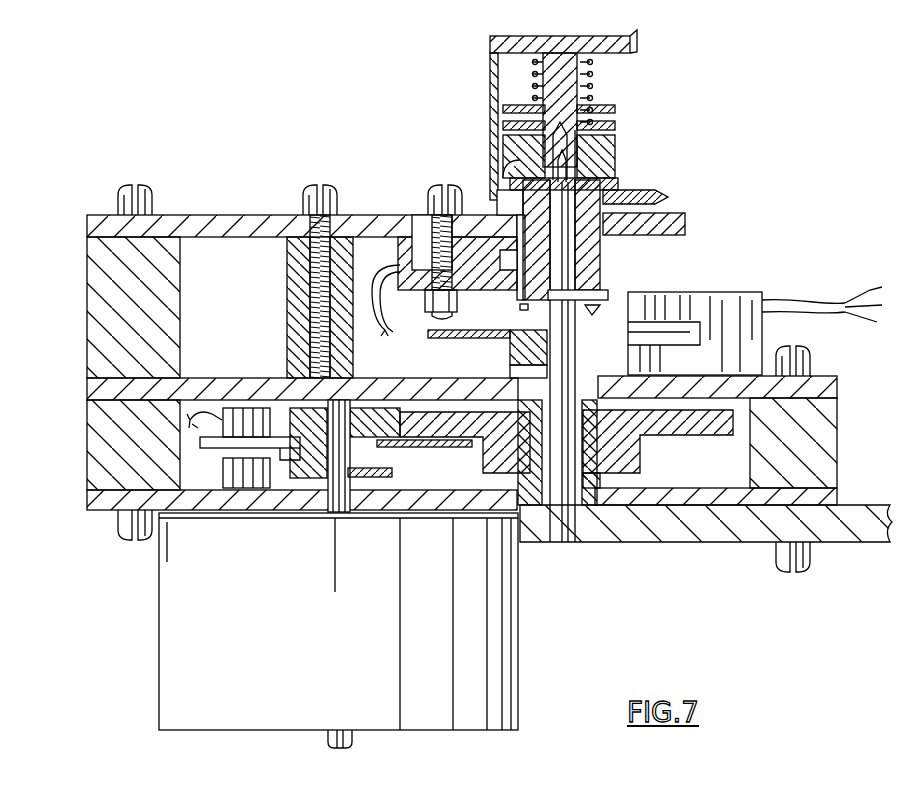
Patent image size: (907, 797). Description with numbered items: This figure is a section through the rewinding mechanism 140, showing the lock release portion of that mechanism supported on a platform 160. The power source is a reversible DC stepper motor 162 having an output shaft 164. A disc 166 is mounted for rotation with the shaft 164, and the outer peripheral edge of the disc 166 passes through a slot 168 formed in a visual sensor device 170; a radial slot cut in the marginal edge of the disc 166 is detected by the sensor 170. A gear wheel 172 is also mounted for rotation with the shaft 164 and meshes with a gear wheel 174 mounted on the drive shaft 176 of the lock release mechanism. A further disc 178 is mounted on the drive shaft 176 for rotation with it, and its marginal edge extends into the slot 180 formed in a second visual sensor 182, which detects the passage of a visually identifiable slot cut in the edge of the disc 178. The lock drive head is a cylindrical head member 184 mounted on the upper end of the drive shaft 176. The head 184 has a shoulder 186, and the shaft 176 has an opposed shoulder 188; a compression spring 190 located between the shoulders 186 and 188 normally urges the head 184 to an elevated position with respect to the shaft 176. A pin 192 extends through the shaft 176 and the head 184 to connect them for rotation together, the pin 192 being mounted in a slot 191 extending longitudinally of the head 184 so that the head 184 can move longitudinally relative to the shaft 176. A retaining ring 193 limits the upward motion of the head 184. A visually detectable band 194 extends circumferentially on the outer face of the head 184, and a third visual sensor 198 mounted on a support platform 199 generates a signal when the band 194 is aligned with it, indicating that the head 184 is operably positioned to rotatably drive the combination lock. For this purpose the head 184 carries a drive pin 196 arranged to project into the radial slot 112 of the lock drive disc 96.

The rewinding mechanism 140 is at (181, 150).
The support platform 199 is at (268, 222).
The radial slot 112 is at (515, 150).
The drive pin 196 is at (517, 178).
The third visual sensor 198 is at (478, 230).
The lock drive disc 96 is at (605, 150).
The shoulder 186 is at (599, 189).
The compression spring 190 is at (649, 193).
The shoulder 188 is at (596, 251).
The slot 191 is at (585, 274).
The pin 192 is at (607, 296).
The retaining ring 193 is at (605, 306).
The visually detectable band 194 is at (528, 307).
The head member 184 is at (535, 318).
The disc 178 is at (676, 327).
The second visual sensor 182 is at (748, 300).
The slot 180 is at (700, 342).
The gear wheel 174 is at (425, 420).
The gear wheel 172 is at (278, 415).
The slot 168 is at (237, 462).
The visual sensor device 170 is at (256, 492).
The output shaft 164 is at (342, 505).
The disc 166 is at (448, 447).
The reversible DC stepper motor 162 is at (503, 645).
The drive shaft 176 is at (575, 532).
The platform 160 is at (668, 530).